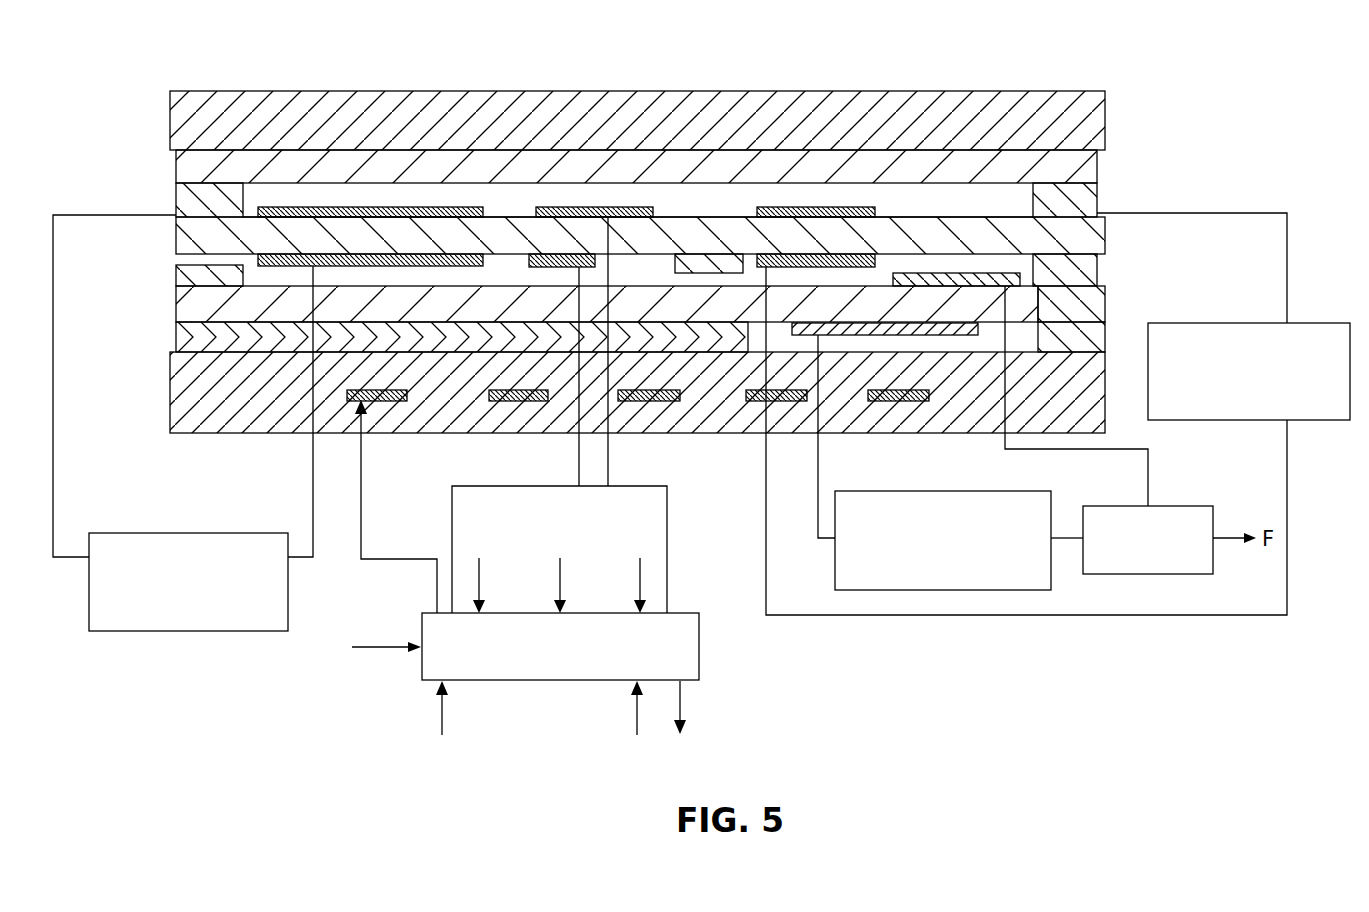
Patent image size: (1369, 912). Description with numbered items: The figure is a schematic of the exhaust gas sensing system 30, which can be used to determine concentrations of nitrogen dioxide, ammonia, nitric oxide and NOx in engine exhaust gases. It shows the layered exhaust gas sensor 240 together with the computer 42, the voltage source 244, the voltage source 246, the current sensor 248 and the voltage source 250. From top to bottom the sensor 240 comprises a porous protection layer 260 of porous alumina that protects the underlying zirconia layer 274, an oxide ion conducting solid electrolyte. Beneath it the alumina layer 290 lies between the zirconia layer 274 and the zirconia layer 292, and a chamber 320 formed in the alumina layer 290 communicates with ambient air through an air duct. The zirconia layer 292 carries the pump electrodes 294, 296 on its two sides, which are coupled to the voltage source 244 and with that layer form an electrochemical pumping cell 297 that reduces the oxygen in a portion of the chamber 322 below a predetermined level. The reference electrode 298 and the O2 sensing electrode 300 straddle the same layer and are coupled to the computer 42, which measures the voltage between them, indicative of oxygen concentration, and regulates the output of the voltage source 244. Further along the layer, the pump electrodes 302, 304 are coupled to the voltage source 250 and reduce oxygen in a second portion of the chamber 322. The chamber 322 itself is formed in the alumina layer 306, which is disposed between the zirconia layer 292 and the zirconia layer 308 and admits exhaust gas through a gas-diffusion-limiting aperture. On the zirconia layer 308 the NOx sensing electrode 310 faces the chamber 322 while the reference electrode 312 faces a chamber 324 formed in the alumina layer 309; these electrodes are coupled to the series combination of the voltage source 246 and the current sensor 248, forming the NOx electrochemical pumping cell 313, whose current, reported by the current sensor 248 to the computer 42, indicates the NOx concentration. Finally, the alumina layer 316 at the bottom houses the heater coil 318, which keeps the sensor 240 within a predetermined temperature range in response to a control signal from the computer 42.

The exhaust gas sensing system 30 is at (752, 45).
The exhaust gas sensor 240 is at (1000, 85).
The porous protection layer 260 is at (170, 118).
The zirconia layer 274 is at (176, 163).
The alumina layer 290 is at (176, 195).
The zirconia layer 292 is at (176, 232).
The pump electrode 294 is at (340, 207).
The pump electrode 296 is at (337, 266).
The electrochemical pumping cell 297 is at (466, 200).
The reference electrode 298 is at (595, 207).
The O2 sensing electrode 300 is at (553, 267).
The pump electrode 302 is at (815, 207).
The pump electrode 304 is at (816, 267).
The alumina layer 306 is at (176, 270).
The zirconia layer 308 is at (176, 300).
The alumina layer 309 is at (176, 328).
The NOx sensing electrode 310 is at (960, 276).
The reference electrode 312 is at (965, 335).
The NOx electrochemical pumping cell 313 is at (1006, 262).
The alumina layer 316 is at (170, 385).
The heater coil 318 is at (377, 401).
The chamber 320 is at (722, 212).
The chamber 322 is at (660, 281).
The chamber 324 is at (843, 340).
The voltage source 244 is at (187, 533).
The voltage source 246 is at (872, 491).
The current sensor 248 is at (1182, 506).
The voltage source 250 is at (1175, 323).
The computer 42 is at (678, 613).